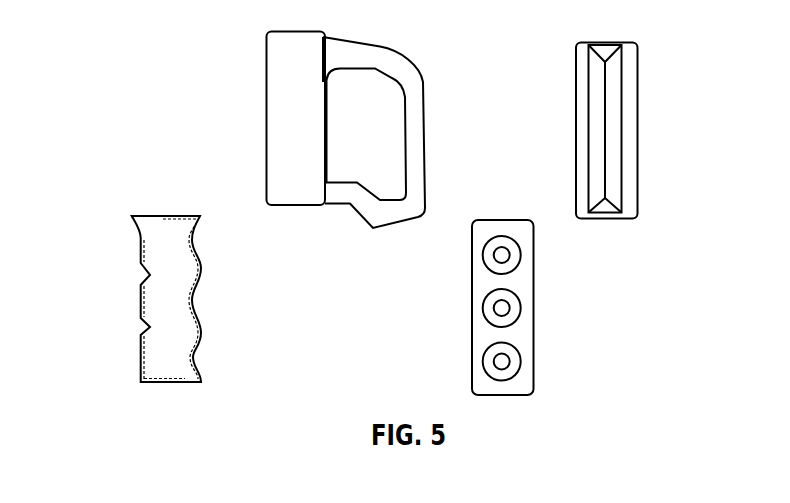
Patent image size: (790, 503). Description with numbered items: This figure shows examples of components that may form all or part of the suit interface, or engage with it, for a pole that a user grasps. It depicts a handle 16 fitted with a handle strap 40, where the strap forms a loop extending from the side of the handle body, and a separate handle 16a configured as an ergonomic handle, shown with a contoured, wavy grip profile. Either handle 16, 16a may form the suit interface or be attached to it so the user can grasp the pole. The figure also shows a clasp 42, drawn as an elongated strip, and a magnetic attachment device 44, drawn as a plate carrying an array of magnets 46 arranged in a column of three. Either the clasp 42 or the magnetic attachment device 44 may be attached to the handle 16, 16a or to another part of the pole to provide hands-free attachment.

The handle 16 is at (280, 98).
The handle 16a is at (148, 258).
The handle strap 40 is at (417, 108).
The clasp 42 is at (612, 90).
The magnetic attachment device 44 is at (525, 282).
The array of magnets 46 is at (498, 360).